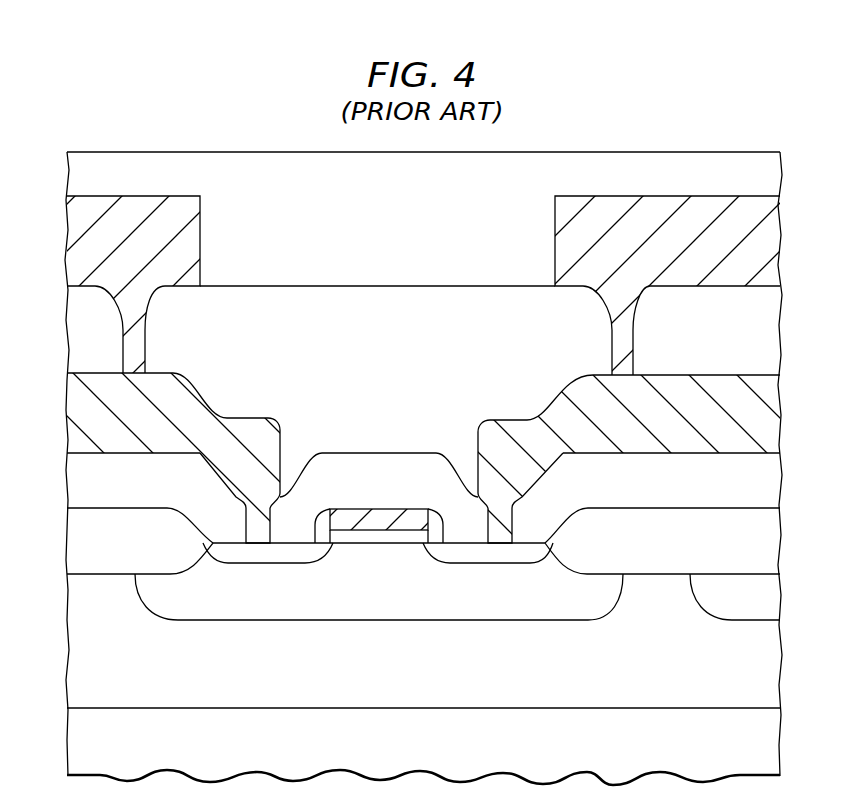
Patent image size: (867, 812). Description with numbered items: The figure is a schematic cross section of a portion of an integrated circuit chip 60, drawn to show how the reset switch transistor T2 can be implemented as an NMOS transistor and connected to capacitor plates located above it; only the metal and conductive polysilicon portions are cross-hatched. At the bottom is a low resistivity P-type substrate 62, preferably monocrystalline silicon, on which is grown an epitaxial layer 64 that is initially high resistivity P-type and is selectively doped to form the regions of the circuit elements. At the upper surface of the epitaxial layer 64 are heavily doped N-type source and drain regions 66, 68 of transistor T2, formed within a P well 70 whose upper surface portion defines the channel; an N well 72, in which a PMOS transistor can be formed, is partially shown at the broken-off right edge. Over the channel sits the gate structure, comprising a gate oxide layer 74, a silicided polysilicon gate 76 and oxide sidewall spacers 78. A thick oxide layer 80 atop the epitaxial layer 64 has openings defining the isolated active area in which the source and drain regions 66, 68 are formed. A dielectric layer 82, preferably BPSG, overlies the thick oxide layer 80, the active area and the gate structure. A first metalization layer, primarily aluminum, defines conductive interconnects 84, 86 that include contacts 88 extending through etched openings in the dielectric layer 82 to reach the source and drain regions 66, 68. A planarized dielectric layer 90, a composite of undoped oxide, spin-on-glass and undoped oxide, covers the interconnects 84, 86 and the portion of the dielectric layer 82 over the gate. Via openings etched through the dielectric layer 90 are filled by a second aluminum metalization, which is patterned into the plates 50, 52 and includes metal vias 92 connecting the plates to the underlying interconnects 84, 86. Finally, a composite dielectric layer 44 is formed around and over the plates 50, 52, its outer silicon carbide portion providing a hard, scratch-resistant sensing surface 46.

The dielectric layer 44 is at (222, 152).
The sensing surface 46 is at (620, 152).
The capacitor plate 50 is at (200, 240).
The capacitor plate 52 is at (555, 255).
The integrated circuit chip 60 is at (128, 102).
The P-type substrate 62 is at (67, 738).
The epitaxial layer 64 is at (67, 650).
The source region 66 is at (268, 564).
The drain region 68 is at (493, 564).
The P well 70 is at (300, 621).
The N well 72 is at (770, 605).
The gate oxide layer 74 is at (388, 545).
The silicided polysilicon gate 76 is at (386, 509).
The oxide sidewall spacers 78 is at (316, 524).
The thick oxide layer 80 is at (67, 555).
The dielectric layer 82 is at (67, 485).
The conductive interconnect 84 is at (67, 405).
The conductive interconnect 86 is at (780, 432).
The contacts 88 is at (256, 489).
The planarized dielectric layer 90 is at (380, 286).
The metal vias 92 is at (135, 294).
The reset switch transistor T2 is at (431, 421).